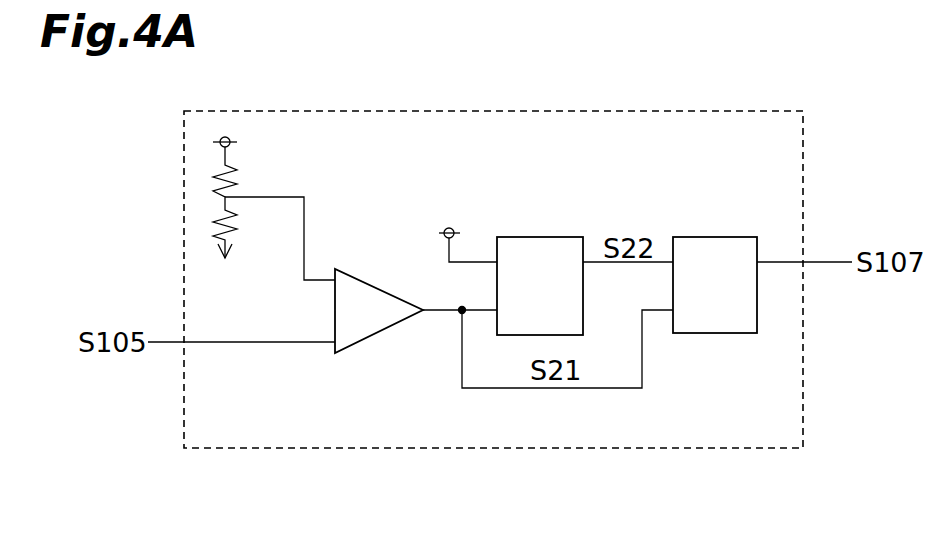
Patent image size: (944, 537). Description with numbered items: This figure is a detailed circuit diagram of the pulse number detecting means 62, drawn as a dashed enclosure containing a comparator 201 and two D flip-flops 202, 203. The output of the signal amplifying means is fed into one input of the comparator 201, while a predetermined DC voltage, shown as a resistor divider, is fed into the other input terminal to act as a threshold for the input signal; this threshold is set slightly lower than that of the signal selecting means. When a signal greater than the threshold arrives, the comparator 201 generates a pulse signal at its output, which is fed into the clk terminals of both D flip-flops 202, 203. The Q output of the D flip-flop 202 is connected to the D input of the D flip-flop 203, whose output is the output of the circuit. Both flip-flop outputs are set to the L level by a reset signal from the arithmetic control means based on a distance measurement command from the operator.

The pulse number detecting means 62 is at (758, 111).
The comparator 201 is at (372, 342).
The D flip-flop 202 is at (548, 237).
The D flip-flop 203 is at (733, 237).